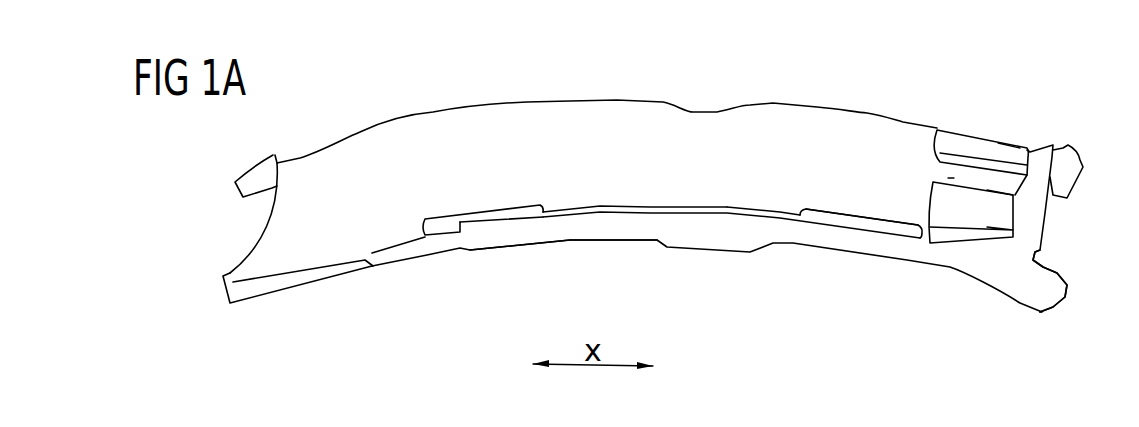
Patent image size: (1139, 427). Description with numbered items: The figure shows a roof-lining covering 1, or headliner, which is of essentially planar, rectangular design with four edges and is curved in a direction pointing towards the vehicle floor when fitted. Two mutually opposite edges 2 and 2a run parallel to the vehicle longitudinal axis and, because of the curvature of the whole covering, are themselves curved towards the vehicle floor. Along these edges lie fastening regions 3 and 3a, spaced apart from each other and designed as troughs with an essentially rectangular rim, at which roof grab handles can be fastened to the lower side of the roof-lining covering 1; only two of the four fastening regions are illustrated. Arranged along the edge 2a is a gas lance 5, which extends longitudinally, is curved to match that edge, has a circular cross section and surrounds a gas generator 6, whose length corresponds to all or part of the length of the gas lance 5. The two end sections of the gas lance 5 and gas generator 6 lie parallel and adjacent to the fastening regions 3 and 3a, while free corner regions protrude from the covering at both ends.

The roof-lining covering 1 is at (838, 138).
The edge 2 is at (580, 100).
The edge 2a is at (595, 240).
The fastening region 3 is at (438, 222).
The fastening region 3a is at (892, 223).
The gas lance 5 is at (673, 208).
The gas generator 6 is at (722, 208).